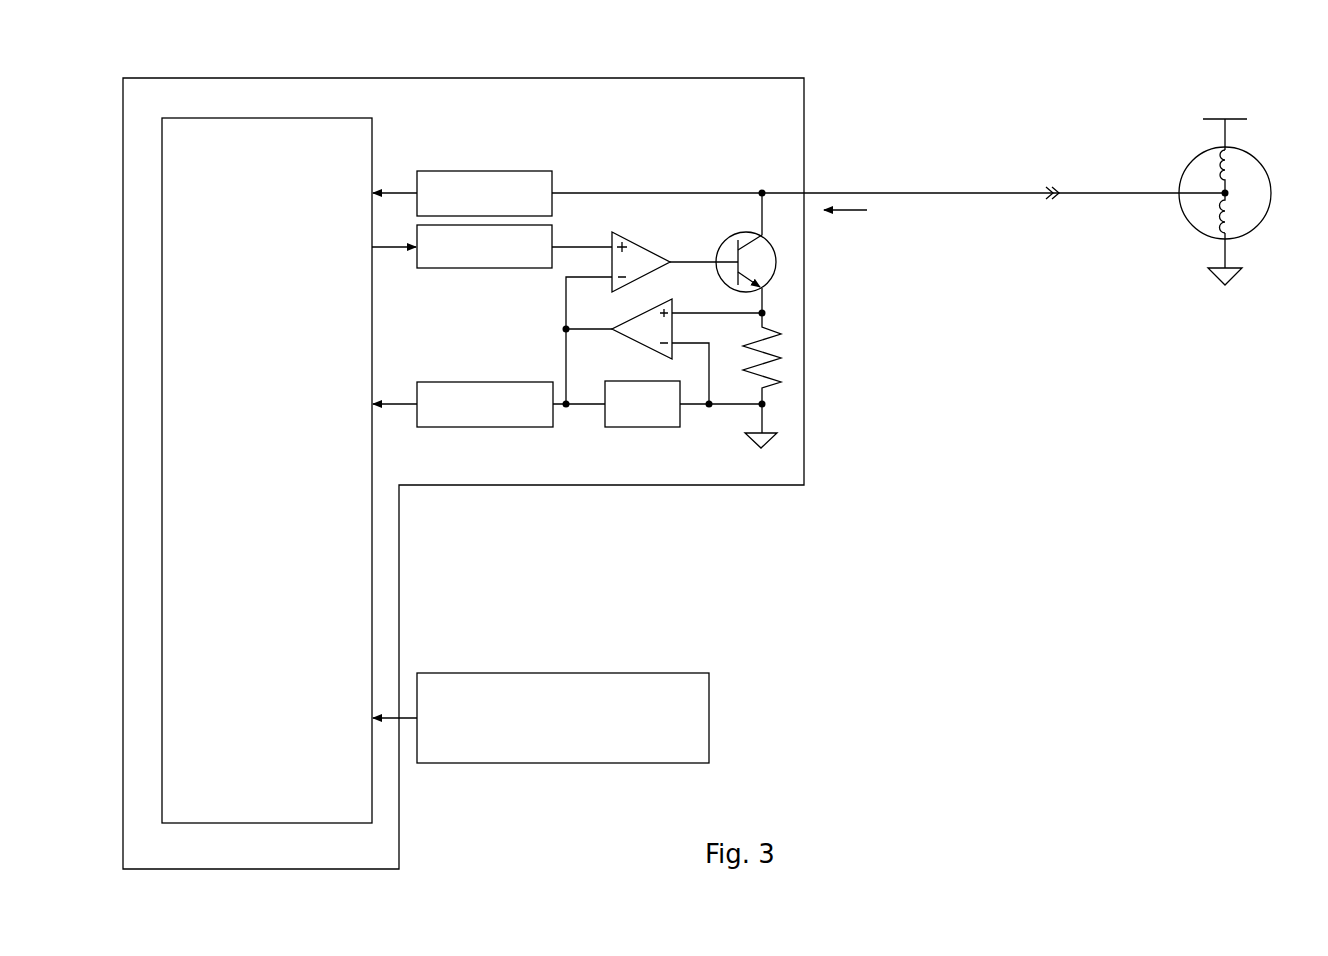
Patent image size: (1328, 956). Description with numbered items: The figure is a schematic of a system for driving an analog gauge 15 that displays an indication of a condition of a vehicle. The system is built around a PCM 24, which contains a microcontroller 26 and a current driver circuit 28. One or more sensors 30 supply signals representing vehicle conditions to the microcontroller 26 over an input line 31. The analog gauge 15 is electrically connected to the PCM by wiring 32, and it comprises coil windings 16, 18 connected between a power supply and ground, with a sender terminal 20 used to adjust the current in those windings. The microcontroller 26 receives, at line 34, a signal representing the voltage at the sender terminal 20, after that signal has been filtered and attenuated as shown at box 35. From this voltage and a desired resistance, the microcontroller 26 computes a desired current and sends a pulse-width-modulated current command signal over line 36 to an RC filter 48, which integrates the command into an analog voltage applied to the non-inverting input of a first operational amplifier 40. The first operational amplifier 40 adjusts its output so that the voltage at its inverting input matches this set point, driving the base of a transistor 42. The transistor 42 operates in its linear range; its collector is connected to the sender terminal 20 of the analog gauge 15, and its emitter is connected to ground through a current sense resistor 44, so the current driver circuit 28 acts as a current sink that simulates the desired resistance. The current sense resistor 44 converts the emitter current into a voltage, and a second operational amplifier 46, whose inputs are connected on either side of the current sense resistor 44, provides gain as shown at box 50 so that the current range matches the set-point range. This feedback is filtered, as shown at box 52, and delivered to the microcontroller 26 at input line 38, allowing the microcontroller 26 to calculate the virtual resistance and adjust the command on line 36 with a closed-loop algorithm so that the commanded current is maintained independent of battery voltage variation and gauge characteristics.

The analog gauge 15 is at (1250, 167).
The coil winding 16 is at (1218, 181).
The coil winding 18 is at (1220, 212).
The sender terminal 20 is at (1232, 197).
The PCM 24 is at (696, 78).
The microcontroller 26 is at (250, 118).
The current driver circuit 28 is at (577, 445).
The sensor 30 is at (650, 673).
The input line 31 is at (405, 720).
The wiring 32 is at (958, 190).
The line 34 is at (400, 187).
The box 35 is at (496, 171).
The line 36 is at (395, 252).
The input line 38 is at (401, 396).
The first operational amplifier 40 is at (644, 232).
The transistor 42 is at (777, 265).
The current sense resistor 44 is at (783, 372).
The second operational amplifier 46 is at (636, 344).
The RC filter 48 is at (489, 268).
The box 50 is at (645, 427).
The box 52 is at (478, 427).